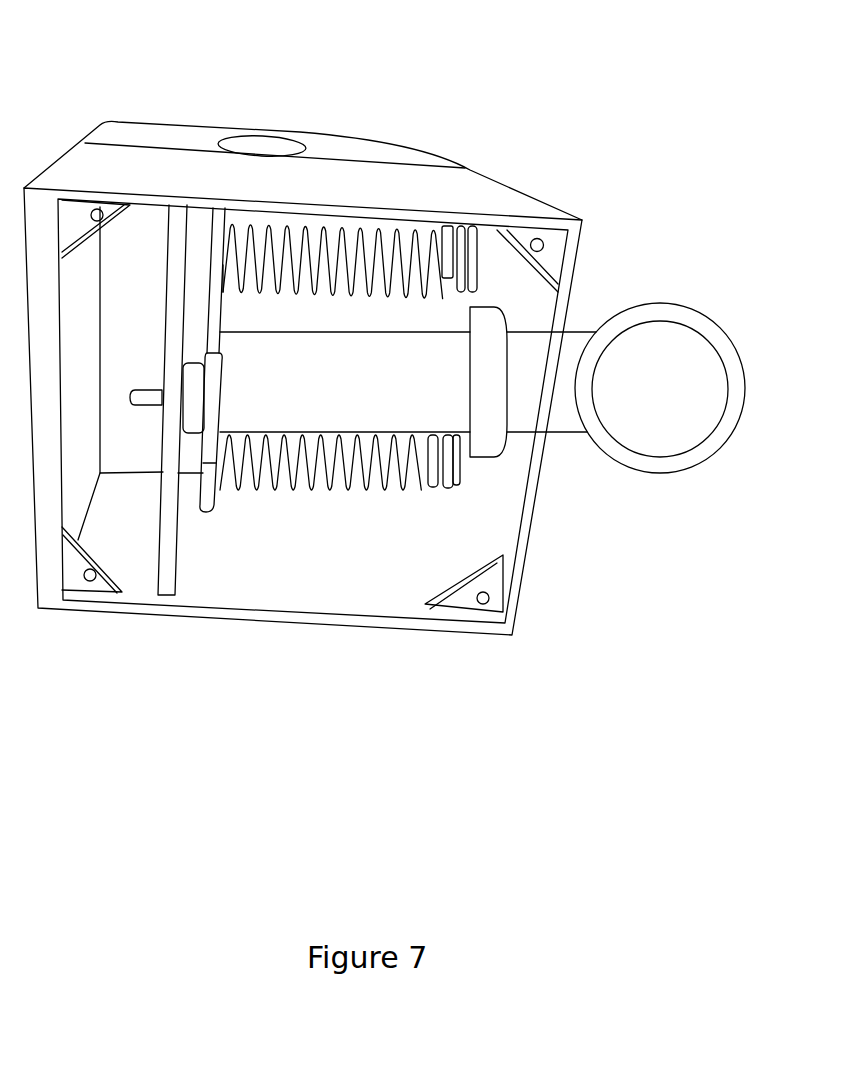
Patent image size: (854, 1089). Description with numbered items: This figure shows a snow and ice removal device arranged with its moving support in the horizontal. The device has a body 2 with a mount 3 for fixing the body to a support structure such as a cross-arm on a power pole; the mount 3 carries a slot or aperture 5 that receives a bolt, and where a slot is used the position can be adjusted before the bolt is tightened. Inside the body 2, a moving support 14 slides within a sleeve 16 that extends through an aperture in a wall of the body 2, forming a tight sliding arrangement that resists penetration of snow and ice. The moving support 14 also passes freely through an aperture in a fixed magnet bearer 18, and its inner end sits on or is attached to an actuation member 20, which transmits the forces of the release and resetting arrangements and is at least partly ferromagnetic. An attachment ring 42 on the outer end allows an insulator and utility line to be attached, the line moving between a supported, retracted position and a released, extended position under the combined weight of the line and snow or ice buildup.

The body 2 is at (492, 200).
The mount 3 is at (110, 102).
The slot or aperture 5 is at (257, 133).
The moving support 14 is at (365, 383).
The sleeve 16 is at (492, 360).
The fixed magnet bearer 18 is at (163, 520).
The actuation member 20 is at (207, 513).
The attachment ring 42 is at (658, 460).